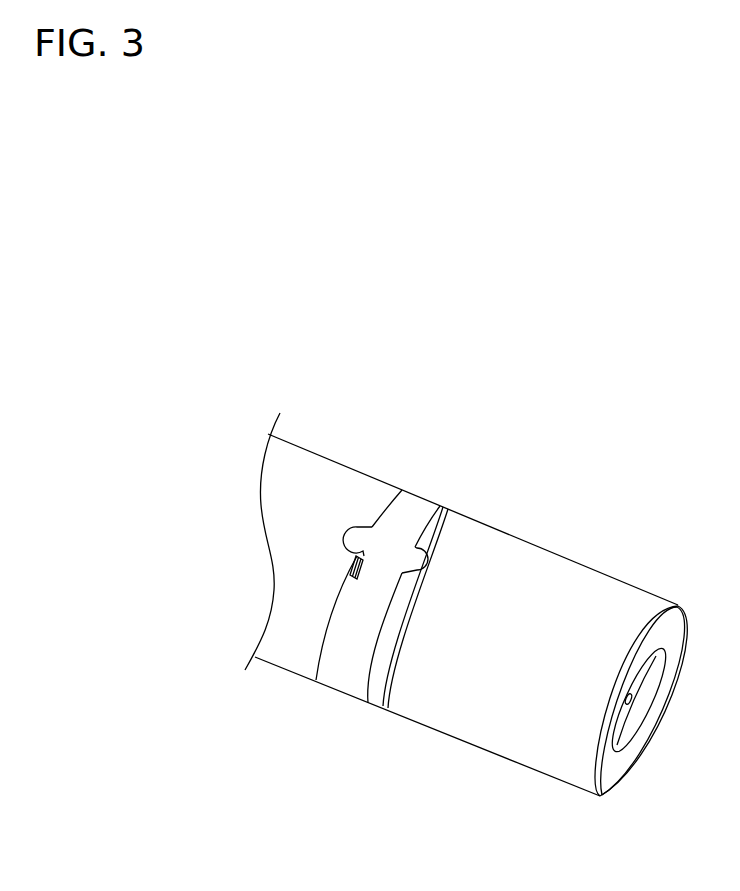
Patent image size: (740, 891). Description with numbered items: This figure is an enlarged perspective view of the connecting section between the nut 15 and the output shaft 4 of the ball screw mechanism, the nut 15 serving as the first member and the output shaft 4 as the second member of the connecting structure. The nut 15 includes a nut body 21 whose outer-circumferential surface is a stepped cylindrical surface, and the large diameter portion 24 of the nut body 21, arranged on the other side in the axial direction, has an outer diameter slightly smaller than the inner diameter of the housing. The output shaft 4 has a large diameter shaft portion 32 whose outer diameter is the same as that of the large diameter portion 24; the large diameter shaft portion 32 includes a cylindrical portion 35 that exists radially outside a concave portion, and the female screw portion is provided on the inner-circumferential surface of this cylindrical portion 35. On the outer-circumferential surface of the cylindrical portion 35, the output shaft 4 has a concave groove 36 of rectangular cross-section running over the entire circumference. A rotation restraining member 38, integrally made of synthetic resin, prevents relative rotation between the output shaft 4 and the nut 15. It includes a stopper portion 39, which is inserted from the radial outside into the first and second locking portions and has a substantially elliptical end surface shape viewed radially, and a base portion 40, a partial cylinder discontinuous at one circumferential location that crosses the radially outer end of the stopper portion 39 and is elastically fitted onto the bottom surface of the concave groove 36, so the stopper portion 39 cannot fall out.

The output shaft 4 is at (306, 470).
The nut 15 is at (542, 780).
The nut body 21 is at (438, 712).
The large diameter portion 24 is at (492, 740).
The large diameter shaft portion 32 is at (286, 643).
The cylindrical portion 35 is at (443, 516).
The concave groove 36 is at (325, 652).
The rotation restraining member 38 is at (354, 399).
The stopper portion 39 is at (356, 526).
The base portion 40 is at (404, 513).